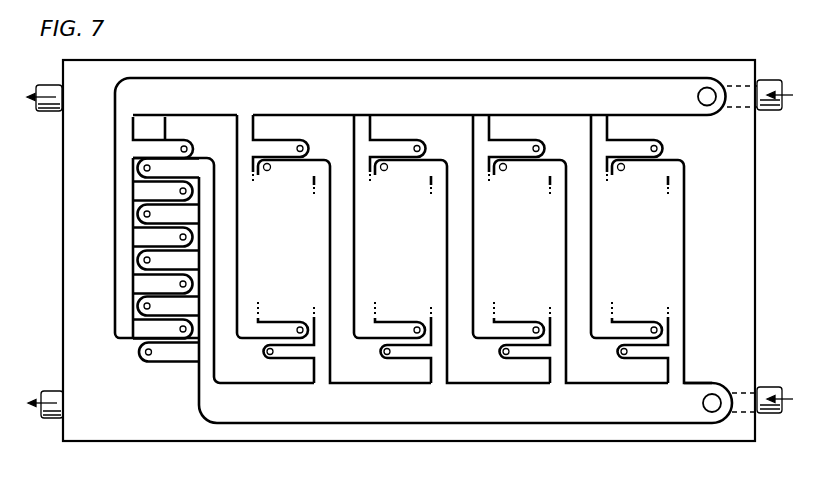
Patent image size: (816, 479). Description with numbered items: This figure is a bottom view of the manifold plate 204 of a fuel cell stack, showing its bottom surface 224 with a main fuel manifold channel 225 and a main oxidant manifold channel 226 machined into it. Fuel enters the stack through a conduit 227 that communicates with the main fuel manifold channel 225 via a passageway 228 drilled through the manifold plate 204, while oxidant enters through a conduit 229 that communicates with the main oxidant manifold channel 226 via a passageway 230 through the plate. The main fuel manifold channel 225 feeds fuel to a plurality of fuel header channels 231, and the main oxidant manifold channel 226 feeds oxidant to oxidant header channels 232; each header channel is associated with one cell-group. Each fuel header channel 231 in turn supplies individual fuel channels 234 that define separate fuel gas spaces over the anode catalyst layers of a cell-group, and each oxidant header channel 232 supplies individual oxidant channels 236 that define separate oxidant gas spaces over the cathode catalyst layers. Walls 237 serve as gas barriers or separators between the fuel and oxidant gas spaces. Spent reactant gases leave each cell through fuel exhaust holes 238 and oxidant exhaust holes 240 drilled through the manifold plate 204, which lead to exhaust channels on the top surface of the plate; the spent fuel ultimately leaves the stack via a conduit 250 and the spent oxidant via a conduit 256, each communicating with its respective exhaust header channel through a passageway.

The manifold plate 204 is at (63, 234).
The bottom surface 224 is at (105, 430).
The main fuel manifold channel 225 is at (398, 79).
The main oxidant manifold channel 226 is at (423, 420).
The conduit 227 is at (766, 80).
The passageway 228 is at (698, 98).
The conduit 229 is at (768, 414).
The passageway 230 is at (702, 404).
The fuel header channel 231 is at (127, 131).
The oxidant header channel 232 is at (212, 376).
The fuel channel 234 is at (173, 152).
The oxidant channel 236 is at (163, 350).
The wall 237 is at (283, 164).
The fuel exhaust hole 238 is at (185, 187).
The oxidant exhaust hole 240 is at (141, 211).
The conduit 250 is at (56, 402).
The conduit 256 is at (54, 94).